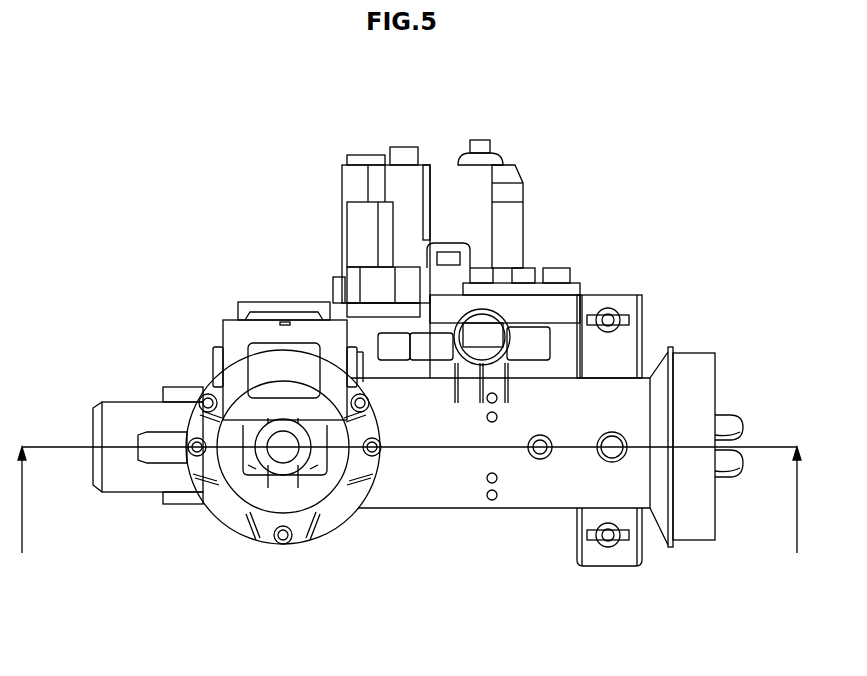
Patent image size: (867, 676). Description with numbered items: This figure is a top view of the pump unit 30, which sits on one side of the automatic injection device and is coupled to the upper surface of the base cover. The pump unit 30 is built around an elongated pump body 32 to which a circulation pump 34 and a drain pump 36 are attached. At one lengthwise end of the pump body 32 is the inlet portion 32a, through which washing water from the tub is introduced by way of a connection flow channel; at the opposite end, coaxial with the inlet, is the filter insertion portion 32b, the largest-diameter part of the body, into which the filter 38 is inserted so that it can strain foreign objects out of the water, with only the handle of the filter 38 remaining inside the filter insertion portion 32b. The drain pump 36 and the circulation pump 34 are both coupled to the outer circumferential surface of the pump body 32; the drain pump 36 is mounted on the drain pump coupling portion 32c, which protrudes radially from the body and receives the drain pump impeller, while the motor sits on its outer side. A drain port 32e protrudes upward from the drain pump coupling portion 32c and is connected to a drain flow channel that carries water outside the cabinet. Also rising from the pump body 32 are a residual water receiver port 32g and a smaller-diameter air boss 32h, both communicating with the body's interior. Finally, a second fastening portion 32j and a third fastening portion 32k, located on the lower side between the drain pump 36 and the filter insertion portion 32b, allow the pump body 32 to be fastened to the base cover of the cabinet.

The pump unit 30 is at (88, 125).
The pump body 32 is at (400, 497).
The inlet portion 32a is at (127, 488).
The filter insertion portion 32b is at (700, 528).
The drain pump coupling portion 32c is at (520, 307).
The drain port 32e is at (508, 337).
The residual water receiver port 32g is at (615, 452).
The air boss 32h is at (542, 455).
The second fastening portion 32j is at (620, 557).
The third fastening portion 32k is at (637, 325).
The circulation pump 34 is at (237, 350).
The drain pump 36 is at (483, 192).
The filter 38 is at (730, 423).